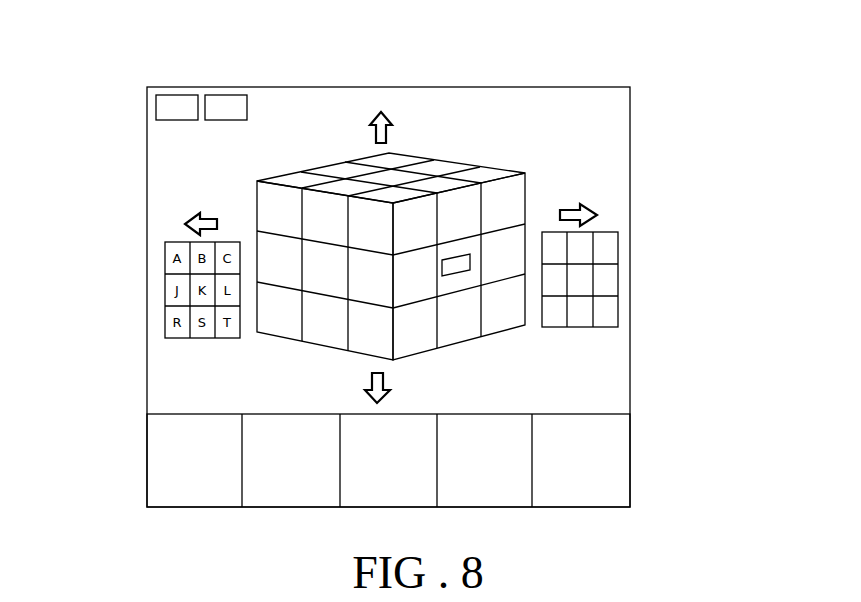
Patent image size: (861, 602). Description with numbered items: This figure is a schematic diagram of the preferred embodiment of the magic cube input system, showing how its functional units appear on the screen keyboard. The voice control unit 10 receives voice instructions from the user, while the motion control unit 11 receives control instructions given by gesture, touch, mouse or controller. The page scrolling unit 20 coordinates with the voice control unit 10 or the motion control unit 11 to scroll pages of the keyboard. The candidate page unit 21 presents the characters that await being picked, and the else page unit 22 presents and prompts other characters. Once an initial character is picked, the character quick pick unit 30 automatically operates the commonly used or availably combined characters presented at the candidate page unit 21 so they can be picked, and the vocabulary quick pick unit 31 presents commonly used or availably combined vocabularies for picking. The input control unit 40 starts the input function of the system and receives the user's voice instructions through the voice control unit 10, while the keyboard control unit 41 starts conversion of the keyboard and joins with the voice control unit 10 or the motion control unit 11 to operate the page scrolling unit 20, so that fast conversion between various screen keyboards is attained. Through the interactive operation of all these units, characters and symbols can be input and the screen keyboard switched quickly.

The voice control unit 10 is at (326, 211).
The motion control unit 11 is at (612, 170).
The page scrolling unit 20 is at (393, 275).
The candidate page unit 21 is at (308, 258).
The else page unit 22 is at (428, 387).
The character quick pick unit 30 is at (312, 320).
The vocabulary quick pick unit 31 is at (630, 460).
The input control unit 40 is at (170, 93).
The keyboard control unit 41 is at (230, 93).